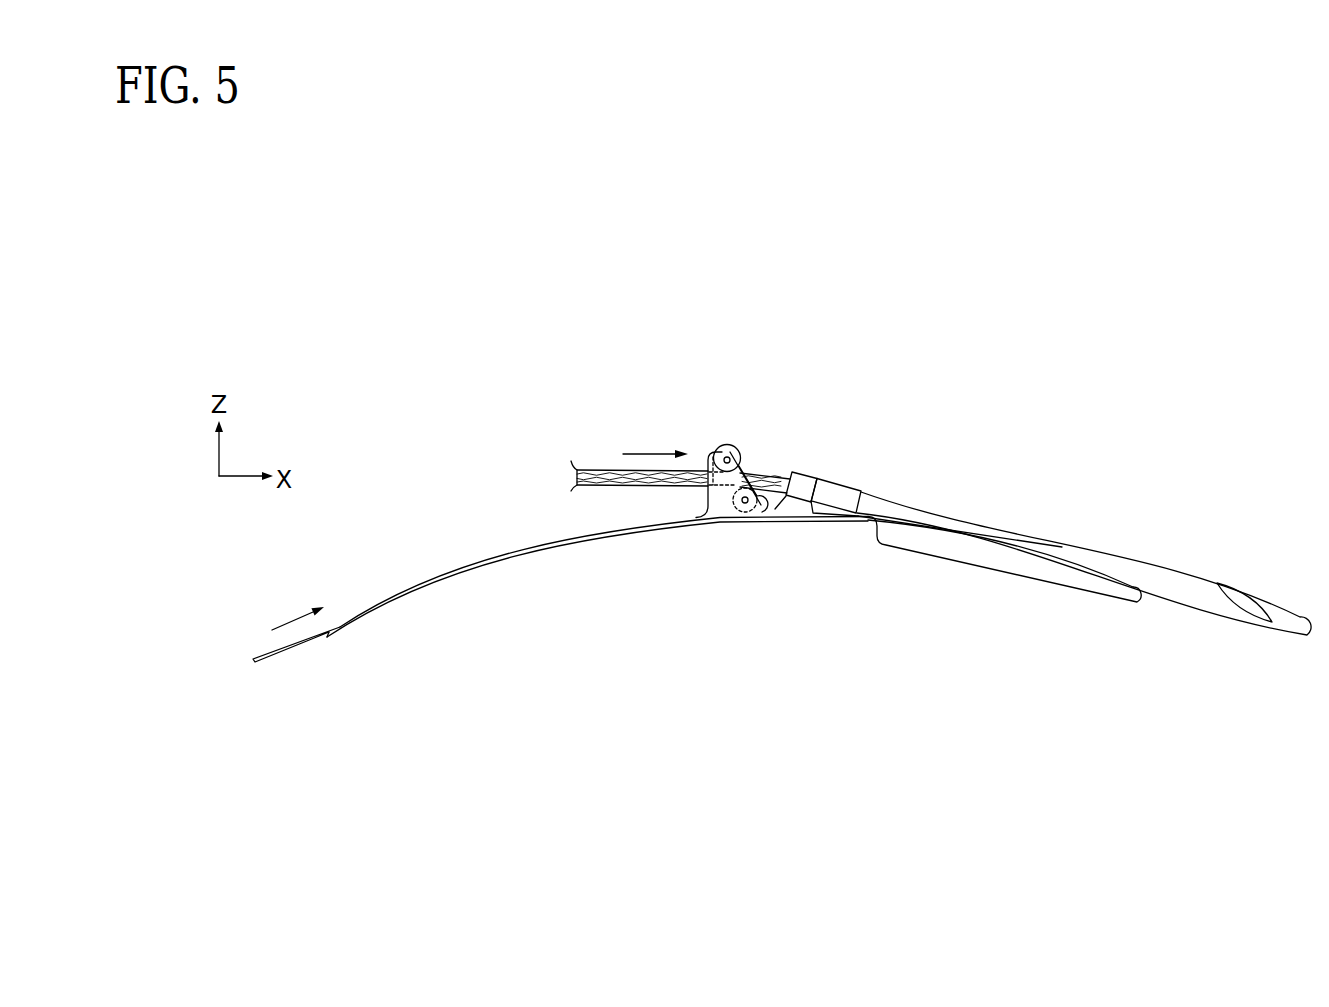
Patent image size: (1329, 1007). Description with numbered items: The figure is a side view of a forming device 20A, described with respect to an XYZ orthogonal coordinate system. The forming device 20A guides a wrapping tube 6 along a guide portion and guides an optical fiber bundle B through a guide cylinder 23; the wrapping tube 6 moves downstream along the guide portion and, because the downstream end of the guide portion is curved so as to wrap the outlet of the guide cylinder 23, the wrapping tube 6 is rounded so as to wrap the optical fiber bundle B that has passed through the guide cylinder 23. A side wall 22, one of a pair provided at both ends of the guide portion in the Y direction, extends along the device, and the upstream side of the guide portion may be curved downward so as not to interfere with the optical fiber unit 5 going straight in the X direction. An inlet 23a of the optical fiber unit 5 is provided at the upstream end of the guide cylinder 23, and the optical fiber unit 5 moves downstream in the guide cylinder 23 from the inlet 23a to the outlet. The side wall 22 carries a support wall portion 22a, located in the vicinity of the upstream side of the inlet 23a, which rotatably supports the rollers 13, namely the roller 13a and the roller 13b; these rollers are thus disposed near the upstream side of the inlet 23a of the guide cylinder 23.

The forming device 20A is at (542, 371).
The optical fiber unit 5 is at (603, 468).
The optical fiber bundle B is at (616, 456).
The wrapping tube 6 is at (262, 655).
The side wall 22 is at (387, 603).
The support wall portion 22a is at (715, 509).
The roller 13 is at (726, 423).
The roller 13a is at (736, 451).
The roller 13b is at (770, 508).
The guide cylinder 23 is at (877, 478).
The inlet 23a is at (786, 468).